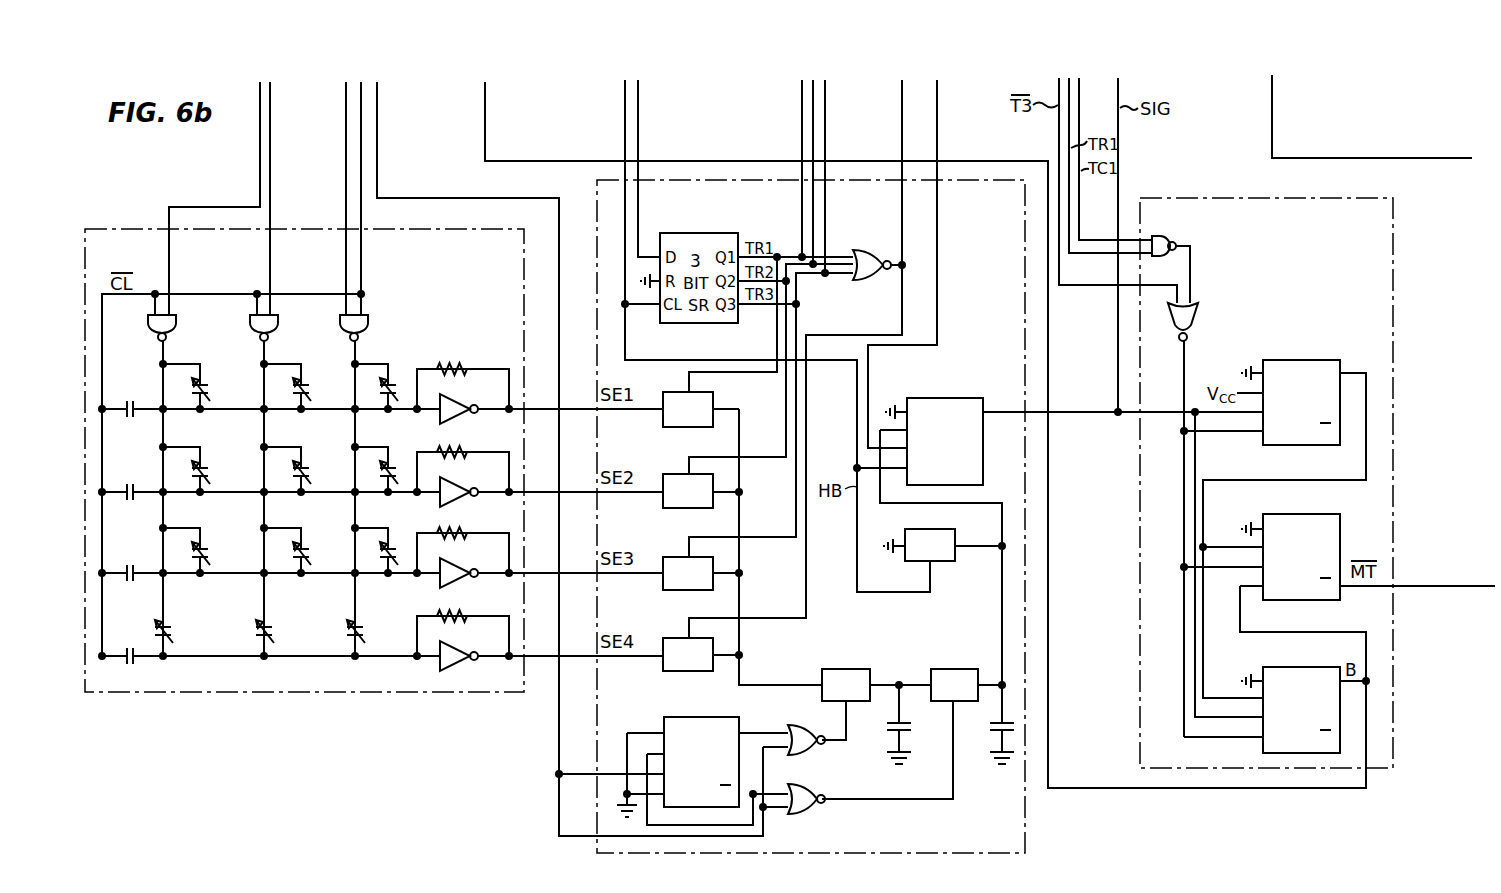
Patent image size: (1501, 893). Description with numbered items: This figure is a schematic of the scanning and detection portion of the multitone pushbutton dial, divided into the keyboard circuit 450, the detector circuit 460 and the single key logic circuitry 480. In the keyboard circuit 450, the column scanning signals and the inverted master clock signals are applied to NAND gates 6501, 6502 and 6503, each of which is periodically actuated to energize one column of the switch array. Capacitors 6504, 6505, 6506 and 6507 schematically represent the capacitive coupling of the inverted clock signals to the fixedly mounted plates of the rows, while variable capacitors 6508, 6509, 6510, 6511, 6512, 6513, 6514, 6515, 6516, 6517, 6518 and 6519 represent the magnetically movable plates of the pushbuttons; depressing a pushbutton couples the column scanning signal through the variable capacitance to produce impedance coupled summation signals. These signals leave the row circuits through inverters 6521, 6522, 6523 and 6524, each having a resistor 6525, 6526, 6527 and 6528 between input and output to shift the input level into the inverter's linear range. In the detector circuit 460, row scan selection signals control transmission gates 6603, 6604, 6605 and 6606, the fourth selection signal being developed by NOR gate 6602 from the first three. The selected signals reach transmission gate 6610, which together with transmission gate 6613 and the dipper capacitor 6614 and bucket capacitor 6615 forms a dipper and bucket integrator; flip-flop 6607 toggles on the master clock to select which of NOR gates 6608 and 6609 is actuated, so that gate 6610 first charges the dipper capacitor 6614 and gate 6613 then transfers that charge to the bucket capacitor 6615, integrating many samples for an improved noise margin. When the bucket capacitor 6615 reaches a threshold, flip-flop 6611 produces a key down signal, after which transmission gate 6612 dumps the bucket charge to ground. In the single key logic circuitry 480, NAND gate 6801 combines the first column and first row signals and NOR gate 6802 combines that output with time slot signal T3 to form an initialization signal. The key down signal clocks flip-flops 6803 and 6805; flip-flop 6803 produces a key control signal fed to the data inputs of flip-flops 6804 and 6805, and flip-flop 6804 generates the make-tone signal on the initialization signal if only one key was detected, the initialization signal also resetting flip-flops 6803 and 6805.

The keyboard circuit 450 is at (507, 270).
The detector circuit 460 is at (785, 213).
The single key logic circuitry 480 is at (1345, 249).
The NAND gate 6501 is at (187, 485).
The NAND gate 6502 is at (289, 485).
The NAND gate 6503 is at (378, 485).
The capacitor 6504 is at (130, 399).
The capacitor 6505 is at (130, 482).
The capacitor 6506 is at (130, 563).
The capacitor 6507 is at (133, 671).
The variable capacitor 6508 is at (211, 386).
The variable capacitor 6509 is at (211, 469).
The variable capacitor 6510 is at (211, 550).
The variable capacitor 6511 is at (189, 631).
The variable capacitor 6512 is at (311, 386).
The variable capacitor 6513 is at (311, 469).
The variable capacitor 6514 is at (311, 550).
The variable capacitor 6515 is at (290, 631).
The variable capacitor 6516 is at (390, 383).
The variable capacitor 6517 is at (392, 466).
The variable capacitor 6518 is at (392, 548).
The variable capacitor 6519 is at (380, 631).
The inverter 6521 is at (540, 402).
The inverter 6522 is at (540, 485).
The inverter 6523 is at (540, 566).
The inverter 6524 is at (540, 649).
The resistor 6525 is at (455, 358).
The resistor 6526 is at (469, 441).
The resistor 6527 is at (470, 523).
The resistor 6528 is at (472, 605).
The NOR gate 6602 is at (873, 254).
The transmission gate 6603 is at (690, 399).
The transmission gate 6604 is at (690, 480).
The transmission gate 6605 is at (690, 562).
The transmission gate 6606 is at (690, 644).
The flip-flop 6607 is at (701, 750).
The NOR gate 6608 is at (800, 729).
The NOR gate 6609 is at (800, 788).
The transmission gate 6610 is at (876, 693).
The flip-flop 6611 is at (934, 430).
The transmission gate 6612 is at (943, 534).
The transmission gate 6613 is at (912, 723).
The dipper capacitor 6614 is at (918, 724).
The bucket capacitor 6615 is at (986, 743).
The NAND gate 6801 is at (1166, 256).
The NOR gate 6802 is at (1207, 520).
The flip-flop 6803 is at (1291, 390).
The flip-flop 6804 is at (1291, 546).
The flip-flop 6805 is at (1291, 699).